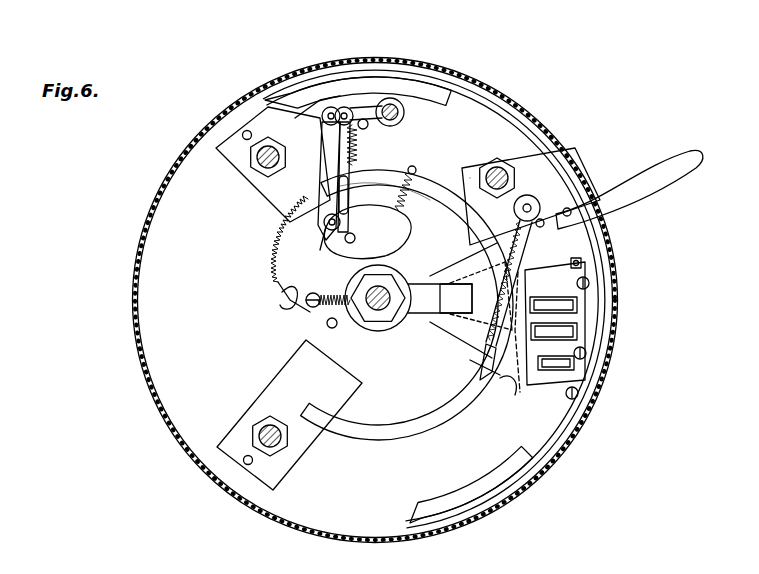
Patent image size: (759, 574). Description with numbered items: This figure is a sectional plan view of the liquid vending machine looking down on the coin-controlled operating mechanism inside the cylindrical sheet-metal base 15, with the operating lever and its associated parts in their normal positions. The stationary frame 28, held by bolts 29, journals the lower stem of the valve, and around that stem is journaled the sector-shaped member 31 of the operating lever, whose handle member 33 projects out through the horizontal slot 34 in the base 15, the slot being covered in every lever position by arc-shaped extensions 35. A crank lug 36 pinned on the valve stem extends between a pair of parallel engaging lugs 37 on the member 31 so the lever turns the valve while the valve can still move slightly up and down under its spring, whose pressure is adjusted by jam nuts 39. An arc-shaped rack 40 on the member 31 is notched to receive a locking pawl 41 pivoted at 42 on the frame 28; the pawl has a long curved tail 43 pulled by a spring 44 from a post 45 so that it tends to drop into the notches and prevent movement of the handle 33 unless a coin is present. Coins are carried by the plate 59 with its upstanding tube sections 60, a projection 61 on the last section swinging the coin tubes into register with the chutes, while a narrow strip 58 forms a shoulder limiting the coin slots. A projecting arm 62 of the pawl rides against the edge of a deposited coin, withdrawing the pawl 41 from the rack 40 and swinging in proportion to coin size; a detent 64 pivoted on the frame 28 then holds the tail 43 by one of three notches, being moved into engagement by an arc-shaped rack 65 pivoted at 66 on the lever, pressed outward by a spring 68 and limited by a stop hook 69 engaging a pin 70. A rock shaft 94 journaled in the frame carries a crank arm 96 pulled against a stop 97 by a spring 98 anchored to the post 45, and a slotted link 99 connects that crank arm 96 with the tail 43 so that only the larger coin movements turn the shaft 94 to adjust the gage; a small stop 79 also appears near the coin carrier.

The base 15 is at (333, 535).
The frame 28 is at (388, 441).
The bolts 29 is at (258, 165).
The sector-shaped member 31 is at (470, 360).
The handle member 33 is at (680, 170).
The horizontal slot 34 is at (606, 233).
The arc-shaped extensions 35 is at (468, 92).
The crank lug 36 is at (400, 319).
The engaging lugs 37 is at (450, 301).
The jam nuts 39 is at (386, 327).
The arc-shaped rack 40 is at (484, 181).
The locking pawl 41 is at (488, 379).
The pivot 42 is at (538, 200).
The tail 43 is at (436, 186).
The spring 44 is at (400, 207).
The post 45 is at (334, 329).
The narrow strip 58 is at (585, 390).
The plate 59 is at (578, 333).
The tube sections 60 is at (580, 305).
The projection 61 is at (556, 372).
The projecting arm 62 is at (514, 396).
The detent 64 is at (318, 175).
The arc-shaped rack 65 is at (283, 268).
The pivot 66 is at (330, 231).
The spring 68 is at (372, 259).
The stop hook 69 is at (292, 301).
The pin 70 is at (308, 307).
The stop 79 is at (514, 174).
The rock shaft 94 is at (398, 108).
The crank arm 96 is at (357, 108).
The stop 97 is at (368, 127).
The spring 98 is at (357, 150).
The link 99 is at (348, 171).